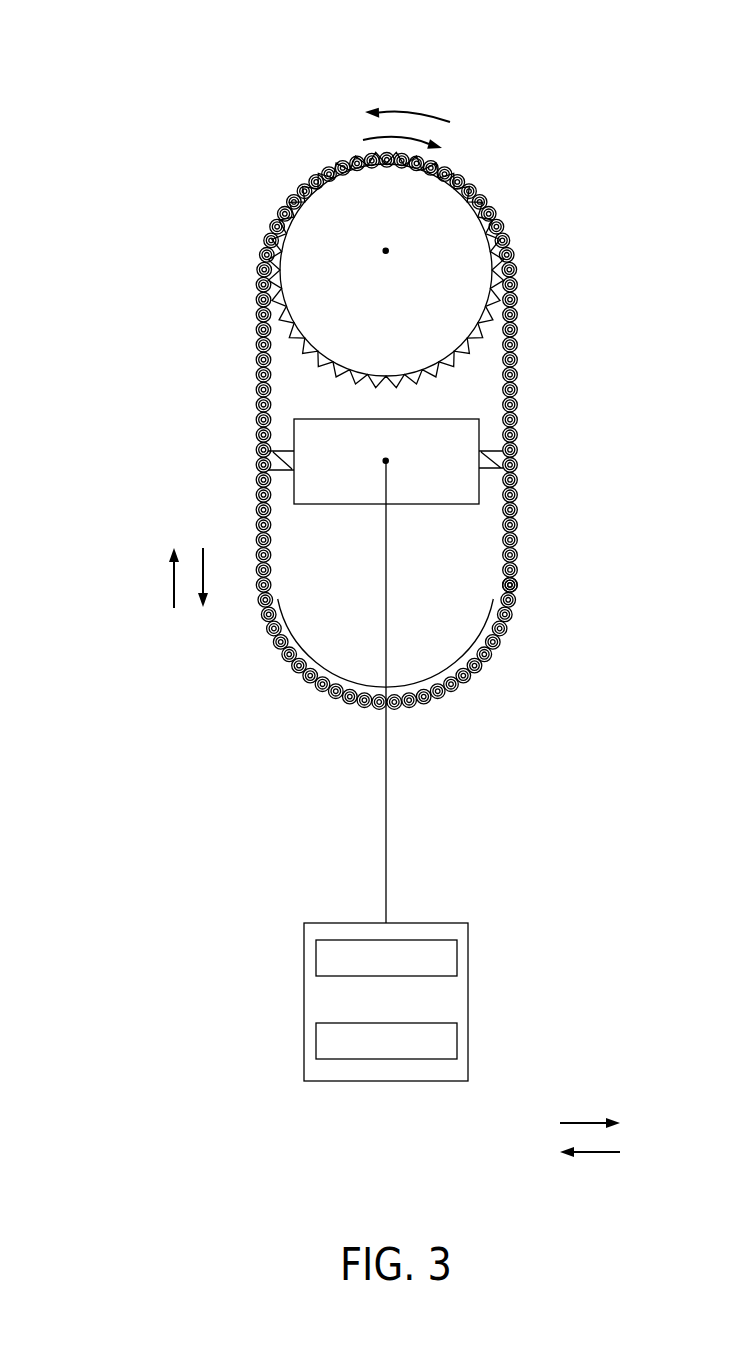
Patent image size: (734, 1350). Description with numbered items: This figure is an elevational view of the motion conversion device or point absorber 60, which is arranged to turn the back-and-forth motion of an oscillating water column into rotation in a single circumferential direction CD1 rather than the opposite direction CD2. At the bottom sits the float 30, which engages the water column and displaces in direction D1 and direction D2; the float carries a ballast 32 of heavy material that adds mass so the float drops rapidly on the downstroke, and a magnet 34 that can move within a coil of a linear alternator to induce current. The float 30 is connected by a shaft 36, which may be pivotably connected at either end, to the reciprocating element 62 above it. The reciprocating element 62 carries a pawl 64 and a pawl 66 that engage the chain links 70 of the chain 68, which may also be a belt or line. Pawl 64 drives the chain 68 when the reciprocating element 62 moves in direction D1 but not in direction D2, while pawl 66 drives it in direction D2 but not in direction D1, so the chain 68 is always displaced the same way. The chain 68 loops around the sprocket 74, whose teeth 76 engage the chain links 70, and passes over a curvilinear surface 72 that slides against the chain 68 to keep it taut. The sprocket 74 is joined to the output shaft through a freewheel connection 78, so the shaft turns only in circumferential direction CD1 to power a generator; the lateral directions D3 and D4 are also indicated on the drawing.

The motion conversion device 60 is at (112, 94).
The sprocket 74 is at (437, 210).
The teeth 76 is at (264, 308).
The freewheel connection 78 is at (385, 250).
The chain 68 is at (517, 548).
The chain links 70 is at (515, 587).
The surface 72 is at (482, 652).
The reciprocating element 62 is at (480, 430).
The pawl 64 is at (272, 457).
The pawl 66 is at (498, 465).
The shaft 36 is at (387, 785).
The float 30 is at (470, 1007).
The magnet 34 is at (452, 958).
The ballast 32 is at (450, 1042).
The circumferential direction CD1 is at (368, 140).
The second rotation direction CD2 is at (415, 112).
The direction D1 is at (172, 587).
The direction D2 is at (203, 568).
The rightward direction D3 is at (587, 1122).
The leftward direction D4 is at (593, 1153).